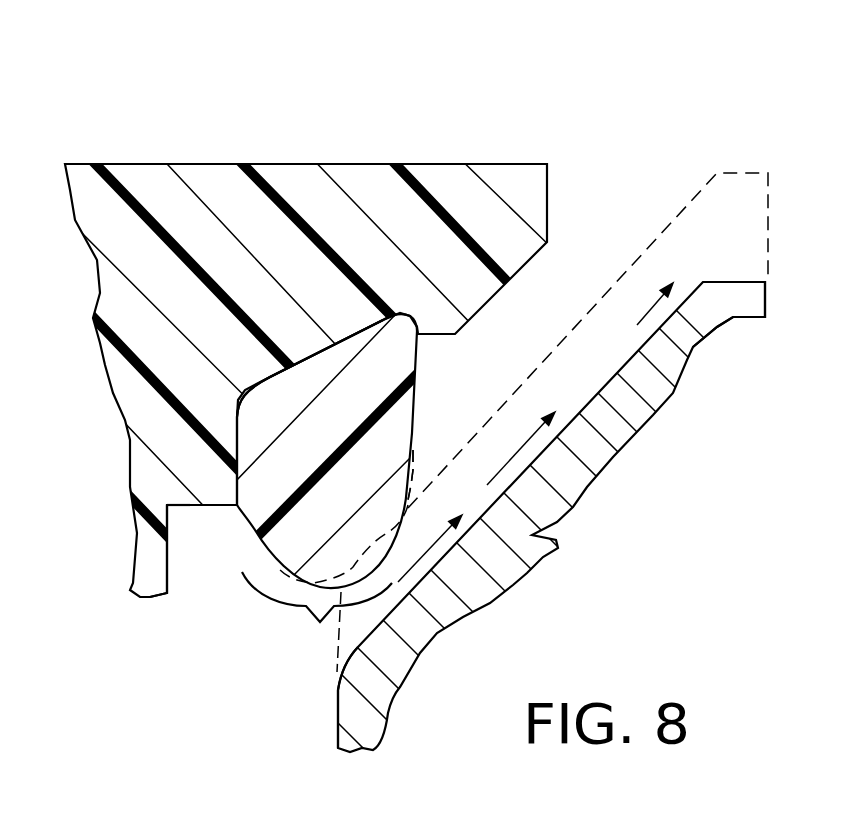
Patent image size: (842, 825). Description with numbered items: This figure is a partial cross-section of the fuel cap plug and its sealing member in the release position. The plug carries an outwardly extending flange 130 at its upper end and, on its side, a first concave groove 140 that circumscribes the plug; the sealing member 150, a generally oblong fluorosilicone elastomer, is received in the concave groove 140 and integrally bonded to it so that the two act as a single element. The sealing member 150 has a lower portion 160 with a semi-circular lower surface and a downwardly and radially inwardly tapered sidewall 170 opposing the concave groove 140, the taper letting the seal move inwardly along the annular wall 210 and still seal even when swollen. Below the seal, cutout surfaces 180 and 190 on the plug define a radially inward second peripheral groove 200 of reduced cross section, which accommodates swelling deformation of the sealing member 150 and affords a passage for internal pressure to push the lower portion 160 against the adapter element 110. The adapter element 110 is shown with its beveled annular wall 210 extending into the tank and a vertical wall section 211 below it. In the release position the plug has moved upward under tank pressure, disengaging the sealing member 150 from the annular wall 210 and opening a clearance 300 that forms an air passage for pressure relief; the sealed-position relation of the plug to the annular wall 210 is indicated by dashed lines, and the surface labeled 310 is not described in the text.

The adapter element 110 is at (744, 292).
The outwardly extending flange 130 is at (290, 186).
The first concave groove 140 is at (264, 385).
The sealing member 150 is at (324, 462).
The lower portion 160 is at (317, 613).
The tapered sidewall 170 is at (411, 448).
The cutout surface 180 is at (167, 580).
The cutout surface 190 is at (188, 506).
The second peripheral groove 200 is at (237, 551).
The annular wall 210 is at (646, 346).
The vertical wall section 211 is at (337, 713).
The clearance 300 is at (353, 628).
The body lower surface 310 is at (437, 338).